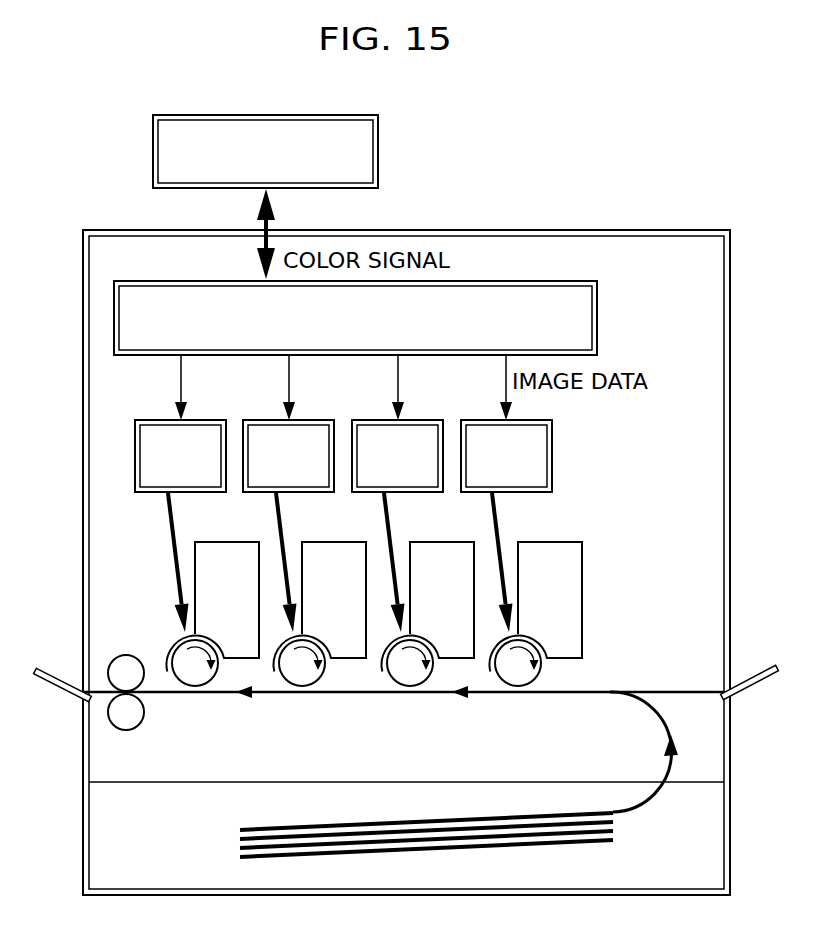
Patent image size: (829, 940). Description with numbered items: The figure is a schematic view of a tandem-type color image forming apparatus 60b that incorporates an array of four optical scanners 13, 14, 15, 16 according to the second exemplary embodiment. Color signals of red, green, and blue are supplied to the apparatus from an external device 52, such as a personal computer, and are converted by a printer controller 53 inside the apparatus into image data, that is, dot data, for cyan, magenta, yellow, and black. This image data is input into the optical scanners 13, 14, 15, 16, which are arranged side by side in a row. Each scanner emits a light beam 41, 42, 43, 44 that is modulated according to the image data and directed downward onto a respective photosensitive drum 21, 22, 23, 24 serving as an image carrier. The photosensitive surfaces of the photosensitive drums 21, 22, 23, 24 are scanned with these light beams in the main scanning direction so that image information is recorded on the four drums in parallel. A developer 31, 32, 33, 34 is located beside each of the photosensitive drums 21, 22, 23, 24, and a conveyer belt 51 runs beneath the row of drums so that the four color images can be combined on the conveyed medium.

The optical scanner 13 is at (160, 420).
The optical scanner 14 is at (268, 420).
The optical scanner 15 is at (377, 420).
The optical scanner 16 is at (486, 420).
The photosensitive drum 21 is at (195, 686).
The photosensitive drum 22 is at (302, 686).
The photosensitive drum 23 is at (410, 686).
The photosensitive drum 24 is at (518, 686).
The developer 31 is at (233, 542).
The developer 32 is at (338, 542).
The developer 33 is at (446, 542).
The developer 34 is at (551, 542).
The light beam 41 is at (170, 517).
The light beam 42 is at (283, 518).
The light beam 43 is at (389, 516).
The light beam 44 is at (497, 516).
The conveyer belt 51 is at (654, 718).
The external device 52 is at (378, 127).
The printer controller 53 is at (597, 297).
The color image forming apparatus 60b is at (631, 231).